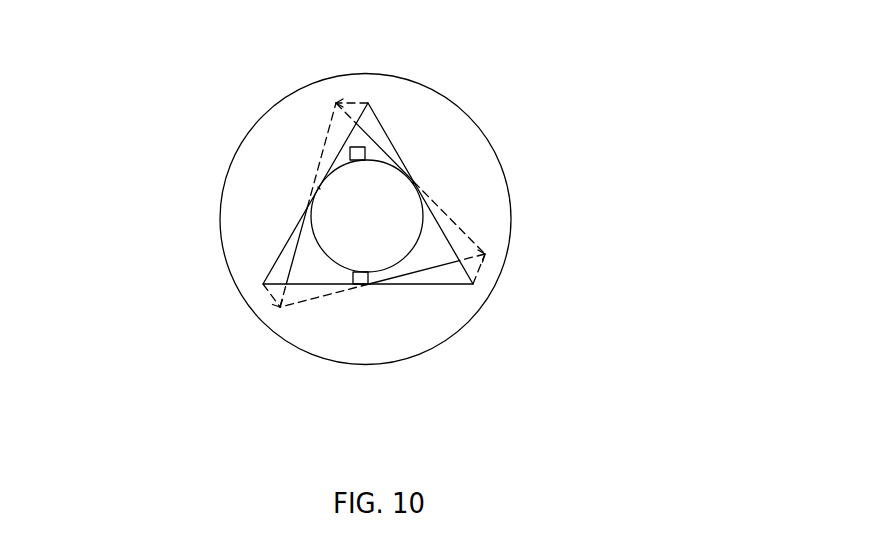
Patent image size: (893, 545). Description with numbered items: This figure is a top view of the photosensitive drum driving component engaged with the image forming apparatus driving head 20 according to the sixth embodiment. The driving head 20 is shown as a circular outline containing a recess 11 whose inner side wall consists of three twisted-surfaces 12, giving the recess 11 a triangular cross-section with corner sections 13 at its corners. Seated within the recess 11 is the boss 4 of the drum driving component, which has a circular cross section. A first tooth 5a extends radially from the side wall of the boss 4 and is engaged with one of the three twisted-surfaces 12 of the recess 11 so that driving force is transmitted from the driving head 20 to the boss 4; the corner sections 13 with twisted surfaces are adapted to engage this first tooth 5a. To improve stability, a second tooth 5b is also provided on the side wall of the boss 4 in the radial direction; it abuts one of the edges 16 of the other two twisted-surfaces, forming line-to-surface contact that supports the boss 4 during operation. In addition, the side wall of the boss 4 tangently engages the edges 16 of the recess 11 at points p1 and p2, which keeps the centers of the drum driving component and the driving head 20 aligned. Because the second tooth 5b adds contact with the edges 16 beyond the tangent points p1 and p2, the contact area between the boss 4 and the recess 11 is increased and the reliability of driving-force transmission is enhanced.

The boss 4 is at (407, 237).
The first tooth 5a is at (352, 147).
The second tooth 5b is at (358, 285).
The recess 11 is at (363, 254).
The twisted-surface 12 is at (370, 127).
The corner section 13 is at (452, 275).
The edge 16 is at (400, 156).
The image forming apparatus driving head 20 is at (463, 140).
The point p1 is at (318, 188).
The point p2 is at (413, 183).